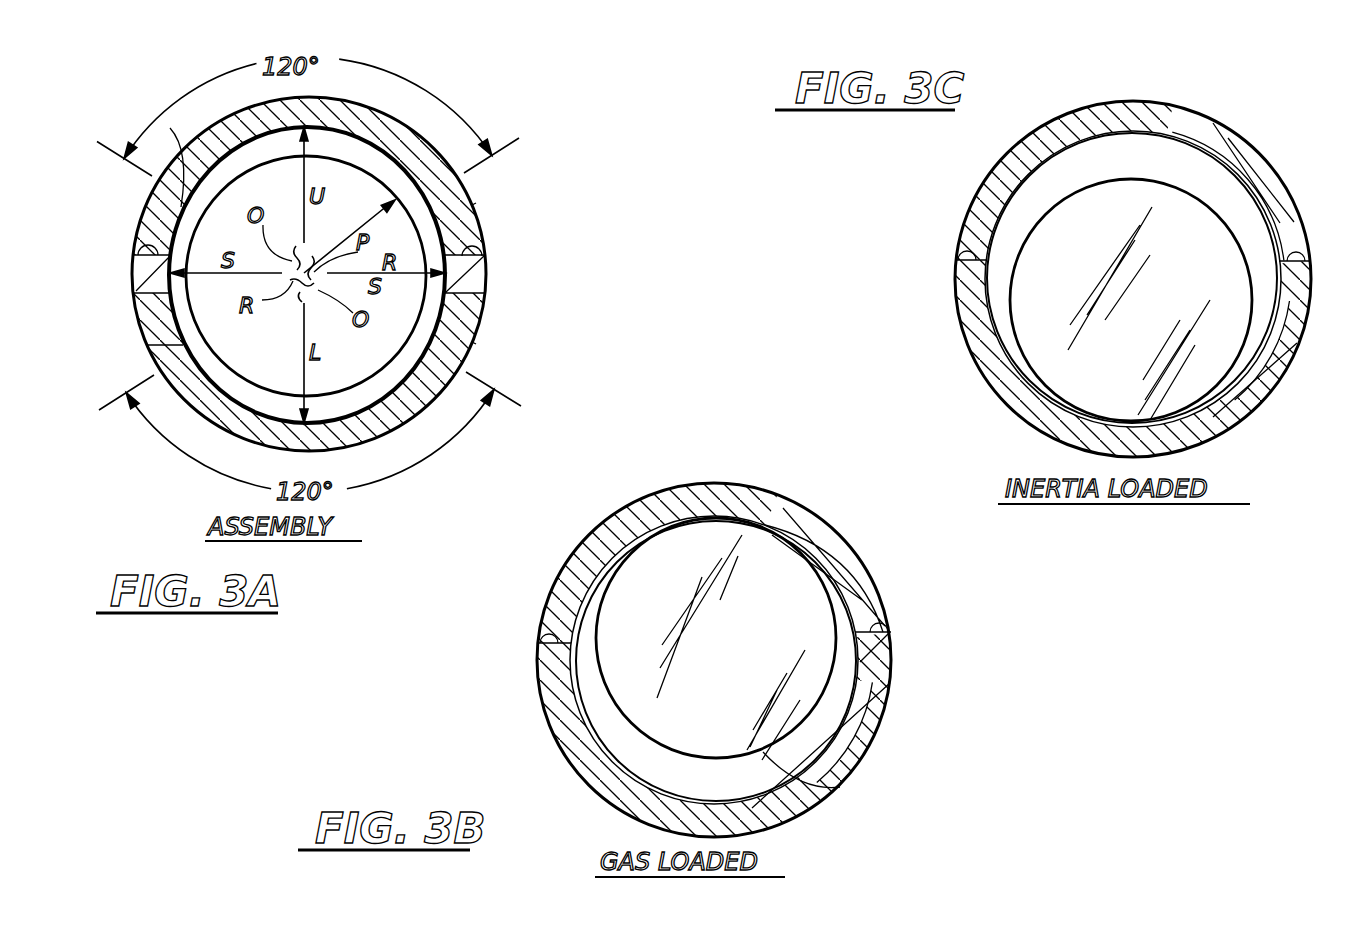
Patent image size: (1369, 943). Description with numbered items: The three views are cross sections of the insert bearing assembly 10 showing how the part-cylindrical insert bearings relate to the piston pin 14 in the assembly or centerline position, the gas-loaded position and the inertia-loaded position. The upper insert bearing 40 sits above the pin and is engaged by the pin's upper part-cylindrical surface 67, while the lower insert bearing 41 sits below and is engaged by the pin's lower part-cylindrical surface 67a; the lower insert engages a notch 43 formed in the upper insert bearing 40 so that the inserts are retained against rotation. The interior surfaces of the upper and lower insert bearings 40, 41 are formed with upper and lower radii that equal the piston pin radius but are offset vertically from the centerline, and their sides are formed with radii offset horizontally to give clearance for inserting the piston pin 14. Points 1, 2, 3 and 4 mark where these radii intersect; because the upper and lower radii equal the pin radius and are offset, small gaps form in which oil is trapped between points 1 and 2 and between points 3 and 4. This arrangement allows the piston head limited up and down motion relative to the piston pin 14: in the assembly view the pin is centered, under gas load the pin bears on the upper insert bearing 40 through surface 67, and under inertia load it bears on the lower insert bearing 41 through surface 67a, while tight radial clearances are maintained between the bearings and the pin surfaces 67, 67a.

In FIG. 3A, the bearing assembly 10 is at (233, 112).
In FIG. 3A, the piston pin 14 is at (192, 292).
In FIG. 3B, the piston pin 14 is at (748, 653).
In FIG. 3C, the piston pin 14 is at (1150, 321).
In FIG. 3A, the upper insert bearing 40 is at (397, 130).
In FIG. 3B, the upper insert bearing 40 is at (590, 537).
In FIG. 3C, the upper insert bearing 40 is at (1098, 118).
In FIG. 3A, the lower insert bearing 41 is at (420, 418).
In FIG. 3B, the lower insert bearing 41 is at (585, 766).
In FIG. 3C, the lower insert bearing 41 is at (1240, 405).
In FIG. 3A, the notch 43 is at (138, 244).
In FIG. 3B, the notch 43 is at (543, 633).
In FIG. 3C, the notch 43 is at (962, 252).
In FIG. 3B, the upper part-cylindrical pin surface 67 is at (765, 527).
In FIG. 3C, the upper part-cylindrical pin surface 67 is at (1142, 198).
In FIG. 3B, the lower part-cylindrical pin surface 67a is at (833, 787).
In FIG. 3C, the lower part-cylindrical pin surface 67a is at (1030, 418).
In FIG. 3A, the radius intersection point 1 is at (169, 162).
In FIG. 3A, the radius intersection point 2 is at (472, 205).
In FIG. 3A, the radius intersection point 3 is at (472, 342).
In FIG. 3A, the radius intersection point 4 is at (146, 345).